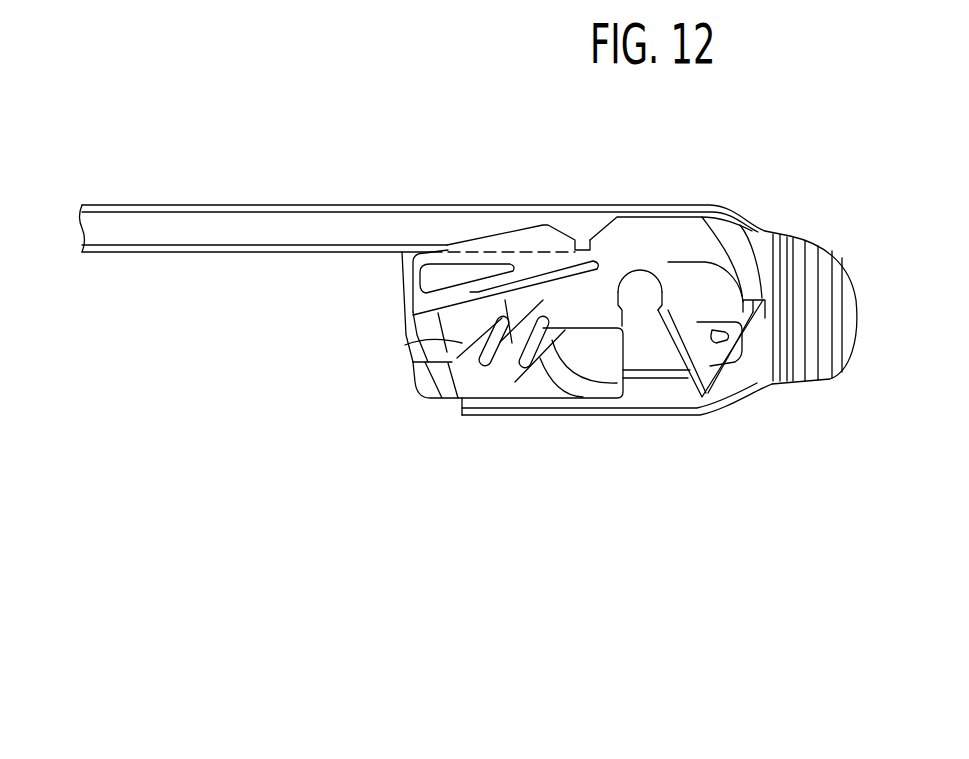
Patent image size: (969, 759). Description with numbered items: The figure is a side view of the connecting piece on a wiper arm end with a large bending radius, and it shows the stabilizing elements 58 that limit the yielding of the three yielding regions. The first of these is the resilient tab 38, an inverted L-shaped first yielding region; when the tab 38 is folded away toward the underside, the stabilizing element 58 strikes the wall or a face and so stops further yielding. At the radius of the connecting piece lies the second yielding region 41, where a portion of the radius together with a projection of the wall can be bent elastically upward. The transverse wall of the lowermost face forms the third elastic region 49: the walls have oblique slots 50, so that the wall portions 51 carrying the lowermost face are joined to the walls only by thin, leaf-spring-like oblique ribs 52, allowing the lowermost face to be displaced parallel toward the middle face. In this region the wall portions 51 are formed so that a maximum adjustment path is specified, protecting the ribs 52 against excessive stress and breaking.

The resilient tab 38 is at (508, 230).
The stabilizing element 58 is at (397, 305).
The oblique slot 50 is at (442, 341).
The wall portion 51 is at (438, 377).
The oblique rib 52 is at (533, 356).
The third elastic region 49 is at (432, 422).
The second yielding region 41 is at (705, 370).